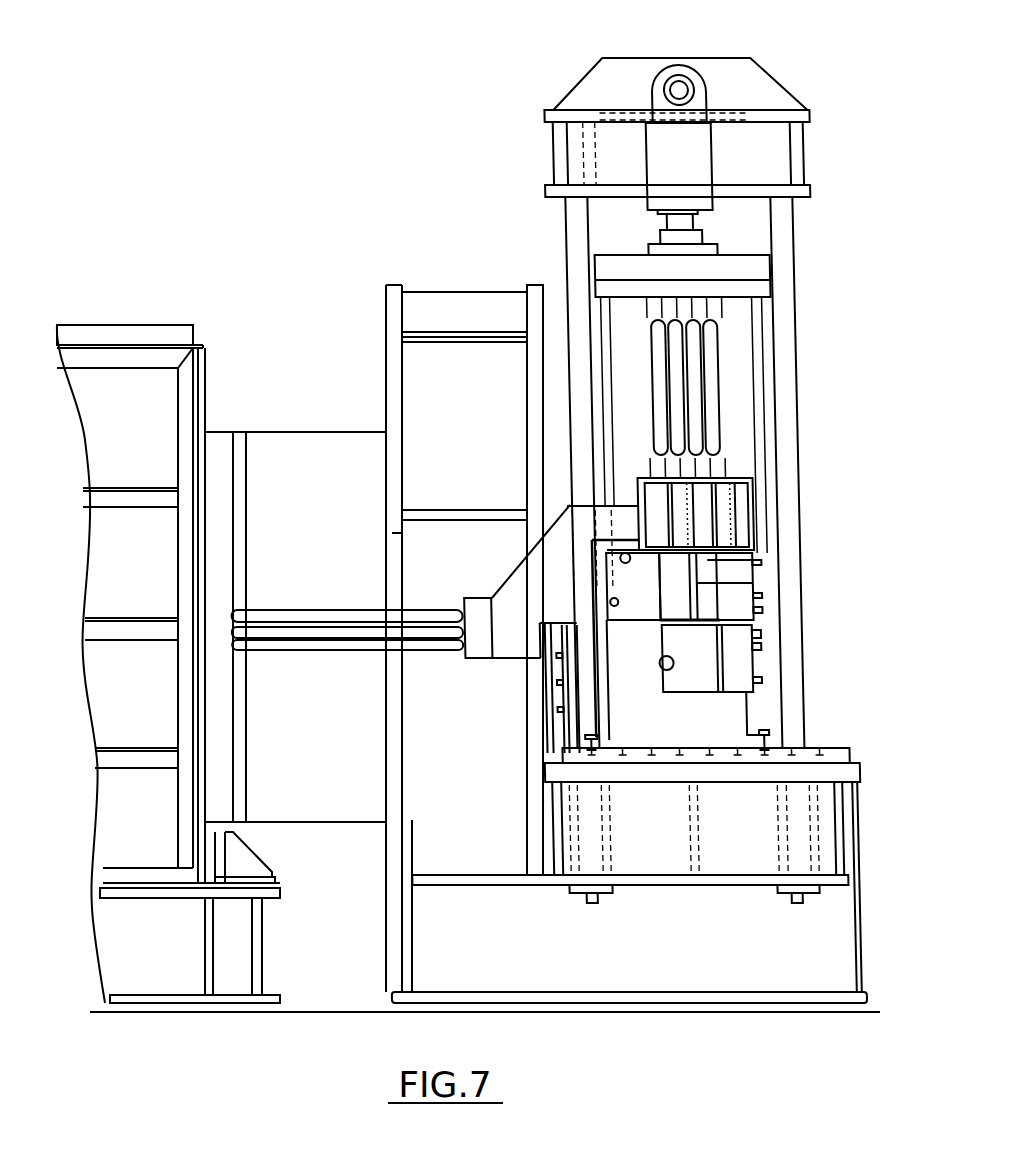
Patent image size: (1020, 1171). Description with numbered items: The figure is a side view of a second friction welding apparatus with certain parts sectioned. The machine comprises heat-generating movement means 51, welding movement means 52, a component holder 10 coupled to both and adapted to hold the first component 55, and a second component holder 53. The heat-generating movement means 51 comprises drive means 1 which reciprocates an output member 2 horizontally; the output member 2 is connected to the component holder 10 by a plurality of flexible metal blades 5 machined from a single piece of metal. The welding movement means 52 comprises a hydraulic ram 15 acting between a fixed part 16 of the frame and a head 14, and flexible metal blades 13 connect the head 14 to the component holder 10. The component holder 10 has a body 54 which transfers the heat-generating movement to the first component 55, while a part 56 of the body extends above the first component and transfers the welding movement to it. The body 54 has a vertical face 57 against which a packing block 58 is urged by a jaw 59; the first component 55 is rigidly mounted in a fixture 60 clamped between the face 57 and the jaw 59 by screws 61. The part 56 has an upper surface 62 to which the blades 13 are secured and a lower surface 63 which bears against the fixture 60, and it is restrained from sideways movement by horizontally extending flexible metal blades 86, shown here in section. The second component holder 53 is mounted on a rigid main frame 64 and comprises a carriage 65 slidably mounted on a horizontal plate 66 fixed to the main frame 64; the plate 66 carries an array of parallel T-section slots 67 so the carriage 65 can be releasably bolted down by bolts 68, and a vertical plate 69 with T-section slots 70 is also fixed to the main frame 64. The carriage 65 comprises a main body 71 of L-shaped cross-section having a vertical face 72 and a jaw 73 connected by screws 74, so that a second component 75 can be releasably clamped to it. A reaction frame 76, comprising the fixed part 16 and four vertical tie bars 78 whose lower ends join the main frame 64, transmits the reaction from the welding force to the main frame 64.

The drive means 1 is at (138, 392).
The output member 2 is at (220, 632).
The flexible metal blades 5 is at (292, 652).
The component holder 10 is at (516, 561).
The flexible metal blades 13 is at (710, 358).
The head 14 is at (746, 262).
The hydraulic ram 15 is at (684, 160).
The fixed part of the frame 16 is at (623, 85).
The heat-generating movement means 51 is at (272, 596).
The welding movement means 52 is at (800, 218).
The second component holder 53 is at (762, 732).
The body 54 is at (506, 567).
The first component 55 is at (745, 565).
The part of the body 56 is at (735, 490).
The vertical face 57 is at (595, 603).
The packing block 58 is at (620, 590).
The jaw 59 is at (742, 596).
The fixture 60 is at (694, 560).
The screws 61 is at (728, 562).
The upper surface 62 is at (734, 478).
The lower surface 63 is at (619, 507).
The main frame 64 is at (621, 853).
The carriage 65 is at (706, 735).
The horizontal plate 66 is at (653, 760).
The T-section slots 67 is at (629, 745).
The bolts 68 is at (758, 752).
The vertical plate 69 is at (545, 698).
The T-section slots 70 is at (544, 712).
The main body 71 is at (616, 745).
The vertical face 72 is at (645, 666).
The jaw 73 is at (740, 680).
The screws 74 is at (740, 648).
The second component 75 is at (692, 745).
The reaction frame 76 is at (799, 290).
The tie bars 78 is at (575, 228).
The flexible metal blades 86 is at (682, 528).